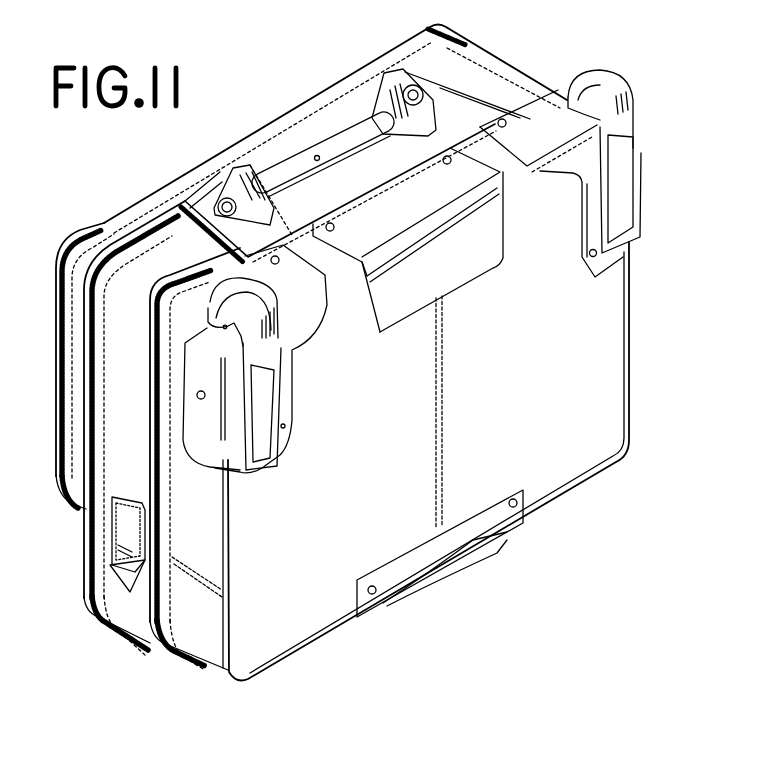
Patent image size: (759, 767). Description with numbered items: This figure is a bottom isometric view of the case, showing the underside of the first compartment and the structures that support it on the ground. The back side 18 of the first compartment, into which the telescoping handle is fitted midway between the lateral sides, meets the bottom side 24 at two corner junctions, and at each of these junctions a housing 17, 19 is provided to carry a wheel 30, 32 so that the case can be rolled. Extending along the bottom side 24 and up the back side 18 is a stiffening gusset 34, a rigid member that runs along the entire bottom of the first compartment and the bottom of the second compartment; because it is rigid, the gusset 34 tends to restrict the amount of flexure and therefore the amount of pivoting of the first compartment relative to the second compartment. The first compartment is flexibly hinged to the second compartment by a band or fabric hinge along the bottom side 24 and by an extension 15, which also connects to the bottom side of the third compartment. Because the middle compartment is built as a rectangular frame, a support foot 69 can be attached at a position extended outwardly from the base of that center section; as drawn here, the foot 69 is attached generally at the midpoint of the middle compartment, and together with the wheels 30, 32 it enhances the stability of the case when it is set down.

The extension 15 is at (353, 107).
The housing 17 is at (270, 417).
The back side 18 is at (600, 363).
The housing 19 is at (630, 213).
The bottom side 24 is at (468, 140).
The wheel 30 is at (278, 330).
The wheel 32 is at (617, 90).
The stiffening gusset 34 is at (472, 250).
The support foot 69 is at (313, 148).